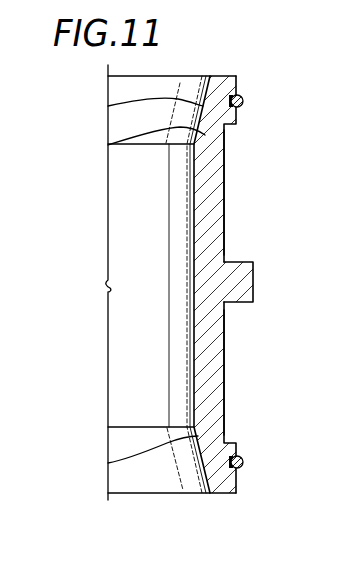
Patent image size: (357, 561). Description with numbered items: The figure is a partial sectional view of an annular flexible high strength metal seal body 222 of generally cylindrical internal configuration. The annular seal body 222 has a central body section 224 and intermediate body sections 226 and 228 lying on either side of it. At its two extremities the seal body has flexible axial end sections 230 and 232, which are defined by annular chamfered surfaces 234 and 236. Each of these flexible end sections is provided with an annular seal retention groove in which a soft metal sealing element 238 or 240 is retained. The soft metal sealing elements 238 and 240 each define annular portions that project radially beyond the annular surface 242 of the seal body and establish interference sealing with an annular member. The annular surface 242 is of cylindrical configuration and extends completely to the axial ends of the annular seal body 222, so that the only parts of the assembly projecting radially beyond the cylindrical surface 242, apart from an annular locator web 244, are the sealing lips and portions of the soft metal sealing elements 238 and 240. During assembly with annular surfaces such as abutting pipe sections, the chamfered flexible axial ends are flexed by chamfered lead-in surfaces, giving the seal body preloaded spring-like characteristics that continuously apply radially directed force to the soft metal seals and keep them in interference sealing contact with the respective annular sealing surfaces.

The annular seal body 222 is at (137, 348).
The central body section 224 is at (200, 280).
The intermediate body section 226 is at (213, 209).
The intermediate body section 228 is at (221, 340).
The flexible axial end section 230 is at (108, 145).
The flexible axial end section 232 is at (213, 458).
The annular chamfered surface 234 is at (108, 106).
The annular chamfered surface 236 is at (108, 463).
The soft metal sealing element 238 is at (245, 100).
The soft metal sealing element 240 is at (243, 463).
The annular surface 242 is at (225, 165).
The annular locator web 244 is at (248, 283).